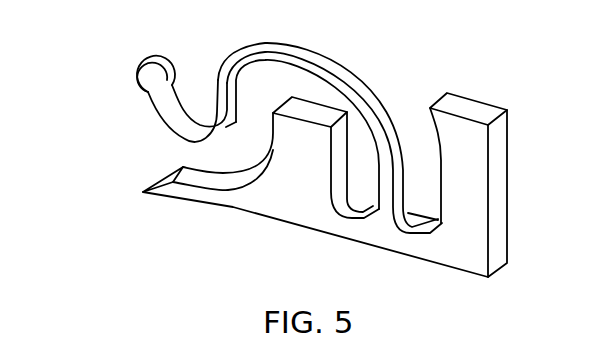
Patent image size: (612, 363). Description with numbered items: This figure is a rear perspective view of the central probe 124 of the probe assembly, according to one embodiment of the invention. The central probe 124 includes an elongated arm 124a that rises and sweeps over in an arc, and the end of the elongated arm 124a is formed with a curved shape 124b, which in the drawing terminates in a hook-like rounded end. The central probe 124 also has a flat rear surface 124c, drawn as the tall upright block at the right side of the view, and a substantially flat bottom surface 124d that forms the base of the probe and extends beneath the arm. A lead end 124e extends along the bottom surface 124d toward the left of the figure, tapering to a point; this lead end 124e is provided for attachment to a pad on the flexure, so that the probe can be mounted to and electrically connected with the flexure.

The central probe 124 is at (434, 51).
The elongated arm 124a is at (313, 52).
The curved shape 124b is at (151, 116).
The flat rear surface 124c is at (500, 154).
The substantially flat bottom surface 124d is at (412, 257).
The lead end 124e is at (172, 203).